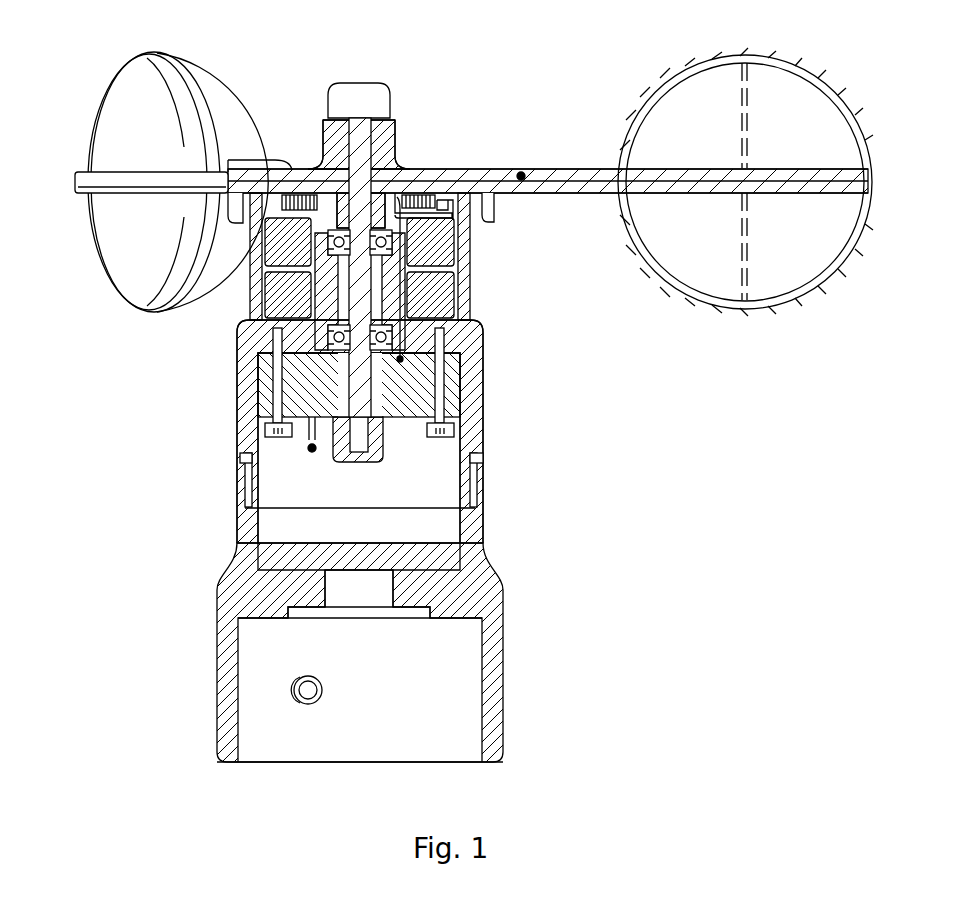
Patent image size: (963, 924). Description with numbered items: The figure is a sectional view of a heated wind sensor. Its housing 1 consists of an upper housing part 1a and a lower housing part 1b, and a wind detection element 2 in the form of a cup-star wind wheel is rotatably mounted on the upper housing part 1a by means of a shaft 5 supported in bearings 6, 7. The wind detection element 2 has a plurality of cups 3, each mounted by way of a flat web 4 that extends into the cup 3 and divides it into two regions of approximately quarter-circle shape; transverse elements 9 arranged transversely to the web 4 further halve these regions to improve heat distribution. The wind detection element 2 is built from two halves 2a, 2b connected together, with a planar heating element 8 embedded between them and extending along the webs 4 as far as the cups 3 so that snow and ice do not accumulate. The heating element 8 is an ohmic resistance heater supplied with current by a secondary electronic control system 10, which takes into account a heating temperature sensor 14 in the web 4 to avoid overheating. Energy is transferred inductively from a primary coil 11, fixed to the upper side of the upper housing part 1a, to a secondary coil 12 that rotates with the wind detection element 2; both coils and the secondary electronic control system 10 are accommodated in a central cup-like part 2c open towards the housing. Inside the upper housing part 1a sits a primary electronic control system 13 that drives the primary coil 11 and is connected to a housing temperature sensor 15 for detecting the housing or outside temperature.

The housing 1 is at (510, 519).
The upper housing part 1a is at (240, 370).
The lower housing part 1b is at (230, 593).
The wind detection element 2 is at (262, 85).
The first half of the wind detection element 2a is at (638, 117).
The second half of the wind detection element 2b is at (672, 288).
The central cup-like part 2c is at (470, 252).
The cup 3 is at (118, 120).
The flat web 4 is at (568, 168).
The shaft 5 is at (358, 430).
The bearing 6 is at (413, 352).
The bearing 7 is at (461, 312).
The heating element 8 is at (460, 168).
The transverse element 9 is at (740, 108).
The secondary electronic control system 10 is at (445, 207).
The primary coil 11 is at (258, 308).
The secondary coil 12 is at (438, 258).
The primary electronic control system 13 is at (455, 407).
The heating temperature sensor 14 is at (518, 168).
The housing temperature sensor 15 is at (309, 450).